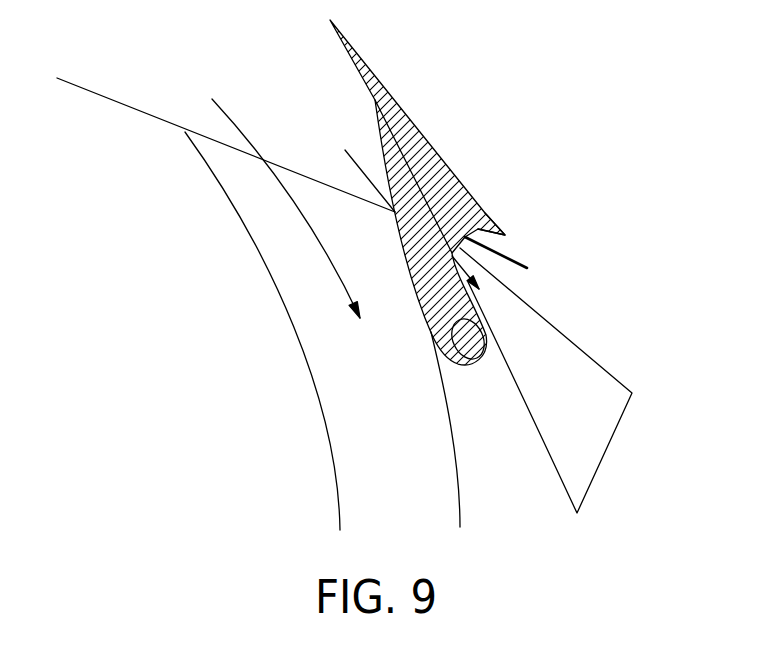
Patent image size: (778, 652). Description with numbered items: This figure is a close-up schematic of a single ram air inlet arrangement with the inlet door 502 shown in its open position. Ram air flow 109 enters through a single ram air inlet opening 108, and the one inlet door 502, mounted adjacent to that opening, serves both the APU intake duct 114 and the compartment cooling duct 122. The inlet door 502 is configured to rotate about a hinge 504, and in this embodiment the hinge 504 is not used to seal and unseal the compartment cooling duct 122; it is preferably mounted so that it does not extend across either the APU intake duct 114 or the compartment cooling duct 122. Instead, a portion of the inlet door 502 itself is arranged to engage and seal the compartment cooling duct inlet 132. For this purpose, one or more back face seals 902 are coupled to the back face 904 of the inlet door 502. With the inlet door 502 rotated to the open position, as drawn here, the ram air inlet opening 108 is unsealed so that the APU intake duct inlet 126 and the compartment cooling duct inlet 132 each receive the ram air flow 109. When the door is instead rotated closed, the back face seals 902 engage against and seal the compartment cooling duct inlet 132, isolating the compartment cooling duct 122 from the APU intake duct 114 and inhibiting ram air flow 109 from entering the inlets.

The ram air inlet opening 108 is at (202, 132).
The ram air flow 109 is at (356, 167).
The APU intake duct 114 is at (300, 335).
The compartment cooling duct 122 is at (602, 367).
The APU intake duct inlet 126 is at (230, 148).
The compartment cooling duct inlet 132 is at (470, 262).
The inlet door 502 is at (400, 115).
The hinge 504 is at (470, 362).
The back face seal 902 is at (482, 230).
The back face 904 is at (483, 212).